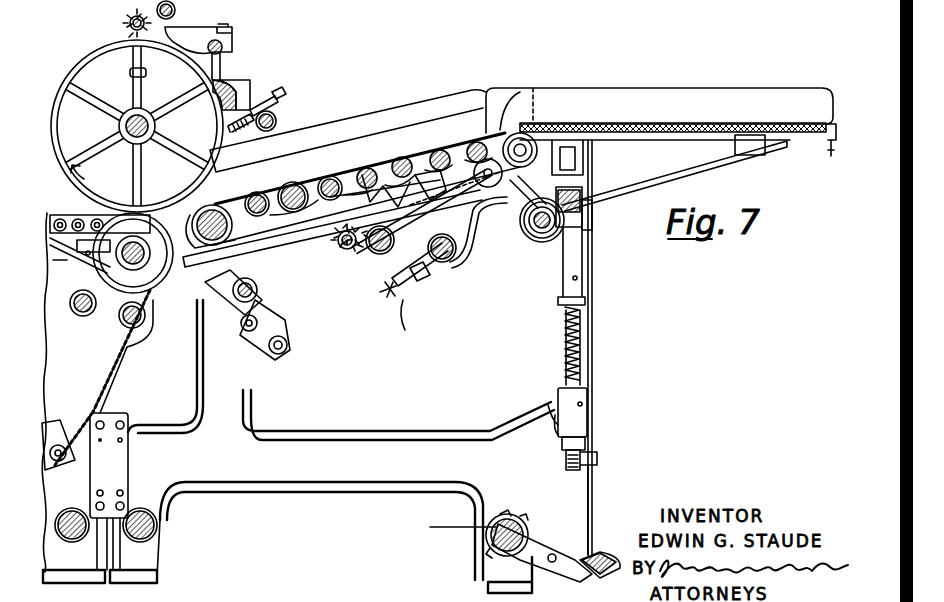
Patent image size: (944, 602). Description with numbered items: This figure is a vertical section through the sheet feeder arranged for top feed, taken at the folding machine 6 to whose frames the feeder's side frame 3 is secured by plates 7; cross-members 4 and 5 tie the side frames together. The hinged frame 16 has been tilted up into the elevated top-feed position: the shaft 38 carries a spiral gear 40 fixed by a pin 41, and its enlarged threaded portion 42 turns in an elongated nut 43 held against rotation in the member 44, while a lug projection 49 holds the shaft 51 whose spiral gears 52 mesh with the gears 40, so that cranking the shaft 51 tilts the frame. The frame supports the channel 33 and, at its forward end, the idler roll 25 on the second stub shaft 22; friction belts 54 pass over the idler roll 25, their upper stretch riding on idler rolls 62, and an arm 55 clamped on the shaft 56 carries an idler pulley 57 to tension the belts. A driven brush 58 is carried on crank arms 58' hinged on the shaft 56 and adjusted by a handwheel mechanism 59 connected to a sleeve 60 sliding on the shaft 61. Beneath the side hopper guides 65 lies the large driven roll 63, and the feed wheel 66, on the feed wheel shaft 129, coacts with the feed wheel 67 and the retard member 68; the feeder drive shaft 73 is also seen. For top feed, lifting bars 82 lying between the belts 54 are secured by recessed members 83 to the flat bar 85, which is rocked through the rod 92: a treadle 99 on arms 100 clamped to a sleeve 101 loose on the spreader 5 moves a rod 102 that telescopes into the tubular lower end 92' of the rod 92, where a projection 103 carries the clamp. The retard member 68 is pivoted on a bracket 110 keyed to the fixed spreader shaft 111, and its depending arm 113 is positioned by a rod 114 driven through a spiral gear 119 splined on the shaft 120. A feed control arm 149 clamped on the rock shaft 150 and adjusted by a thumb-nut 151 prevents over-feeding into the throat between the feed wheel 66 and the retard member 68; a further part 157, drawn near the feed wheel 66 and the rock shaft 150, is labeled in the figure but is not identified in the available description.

The side frame 3 is at (322, 432).
The cross-member 4 is at (158, 538).
The spreader shaft 5 is at (487, 538).
The folding machine 6 is at (101, 398).
The plate 7 is at (128, 468).
The frame 16 is at (470, 262).
The second stub shaft 22 is at (523, 147).
The idler roll 25 is at (520, 108).
The channel 33 is at (605, 205).
The shaft 38 is at (584, 283).
The spiral gear 40 is at (592, 226).
The pin 41 is at (582, 215).
The threaded portion 42 is at (562, 337).
The elongated nut 43 is at (589, 392).
The member 44 is at (588, 405).
The lug projection 49 is at (513, 205).
The shaft 51 is at (538, 240).
The spiral gear 52 is at (548, 244).
The friction belt 54 is at (330, 178).
The arm 55 is at (436, 209).
The shaft 56 is at (378, 256).
The idler pulley 57 is at (507, 200).
The driven brush 58 is at (341, 250).
The crank arm 58' is at (377, 304).
The handwheel mechanism 59 is at (405, 320).
The sleeve 60 is at (415, 292).
The shaft 61 is at (440, 263).
The idler roll 62 is at (473, 165).
The driven roll 63 is at (293, 182).
The side hopper guide 65 is at (383, 113).
The feed wheel 66 is at (118, 45).
The feed wheel 67 is at (122, 255).
The retard member 68 is at (222, 212).
The feeder drive shaft 73 is at (224, 227).
The lifting bar 82 is at (352, 172).
The recessed member 83 is at (585, 127).
The flat bar 85 is at (582, 171).
The rod 92 is at (613, 347).
The tubular lower end 92' is at (600, 347).
The treadle 99 is at (595, 558).
The arm 100 is at (538, 546).
The sleeve 101 is at (494, 526).
The rod 102 is at (593, 479).
The projection 103 is at (598, 458).
The bracket 110 is at (236, 272).
The fixed spreader shaft 111 is at (288, 290).
The depending arm 113 is at (122, 312).
The rod 114 is at (199, 380).
The spiral gear 119 is at (286, 330).
The shaft 120 is at (290, 322).
The feed wheel shaft 129 is at (126, 118).
The feed control arm 149 is at (213, 163).
The rock shaft 150 is at (282, 116).
The thumb-nut 151 is at (280, 92).
The bracket 157 is at (233, 80).